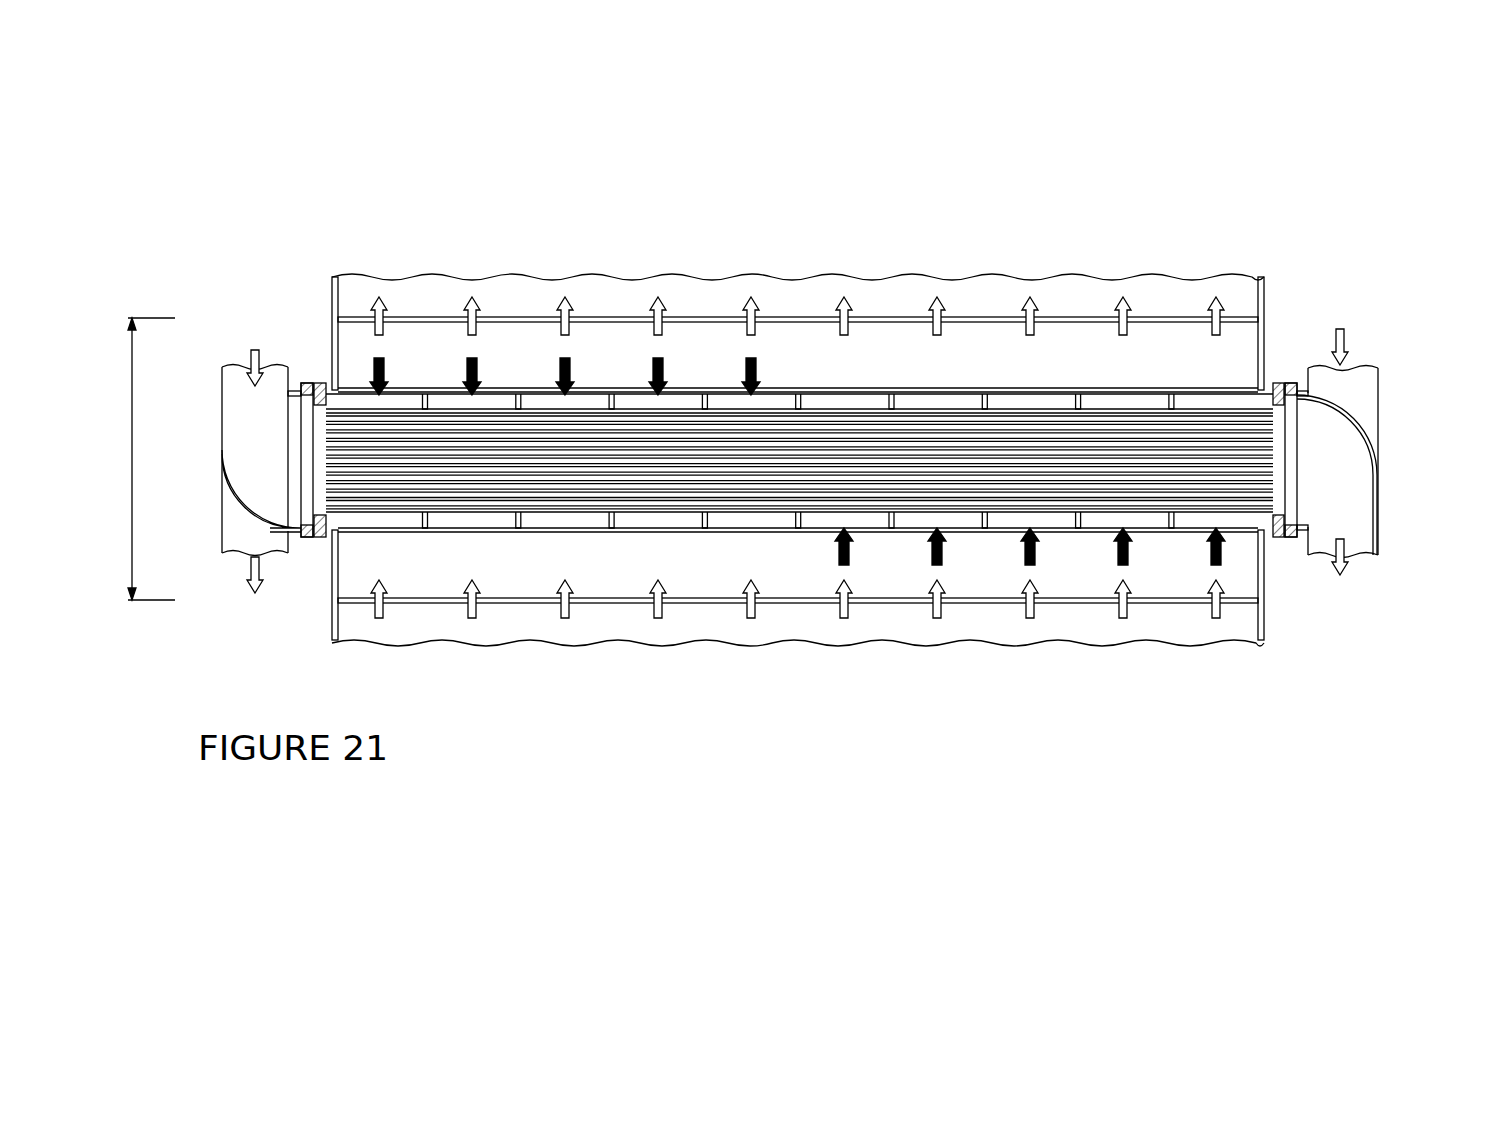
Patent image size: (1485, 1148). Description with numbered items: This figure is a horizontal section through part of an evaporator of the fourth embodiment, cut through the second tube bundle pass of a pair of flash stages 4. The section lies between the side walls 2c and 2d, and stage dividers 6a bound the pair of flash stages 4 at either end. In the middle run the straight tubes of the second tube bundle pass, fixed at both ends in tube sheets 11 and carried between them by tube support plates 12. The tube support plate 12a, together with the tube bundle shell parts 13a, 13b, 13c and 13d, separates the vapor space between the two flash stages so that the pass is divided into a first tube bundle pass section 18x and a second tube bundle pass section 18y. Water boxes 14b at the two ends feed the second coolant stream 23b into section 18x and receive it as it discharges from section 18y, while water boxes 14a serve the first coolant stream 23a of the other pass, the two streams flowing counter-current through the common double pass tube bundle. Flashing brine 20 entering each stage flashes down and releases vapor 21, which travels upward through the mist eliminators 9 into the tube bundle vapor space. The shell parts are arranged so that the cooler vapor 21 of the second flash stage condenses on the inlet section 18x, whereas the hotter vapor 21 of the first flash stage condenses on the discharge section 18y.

The side wall 2c is at (326, 352).
The side wall 2d is at (1266, 628).
The pair of flash stages 4 is at (132, 470).
The stage divider 6a is at (908, 318).
The mist eliminator 9 is at (1062, 364).
The tube sheet 11 is at (320, 540).
The tube support plate 12 is at (518, 396).
The tube support plate 12a is at (800, 534).
The tube bundle shell part 13a is at (683, 388).
The tube bundle shell part 13b is at (722, 534).
The tube bundle shell part 13c is at (1155, 530).
The tube bundle shell part 13d is at (1152, 388).
The water box 14a is at (222, 522).
The water box 14b is at (222, 402).
The first tube bundle pass section 18x is at (443, 406).
The second tube bundle pass section 18y is at (1052, 512).
The flashing brine 20 is at (578, 279).
The vapor 21 is at (756, 385).
The first coolant stream 23a is at (255, 595).
The second coolant stream 23b is at (250, 352).